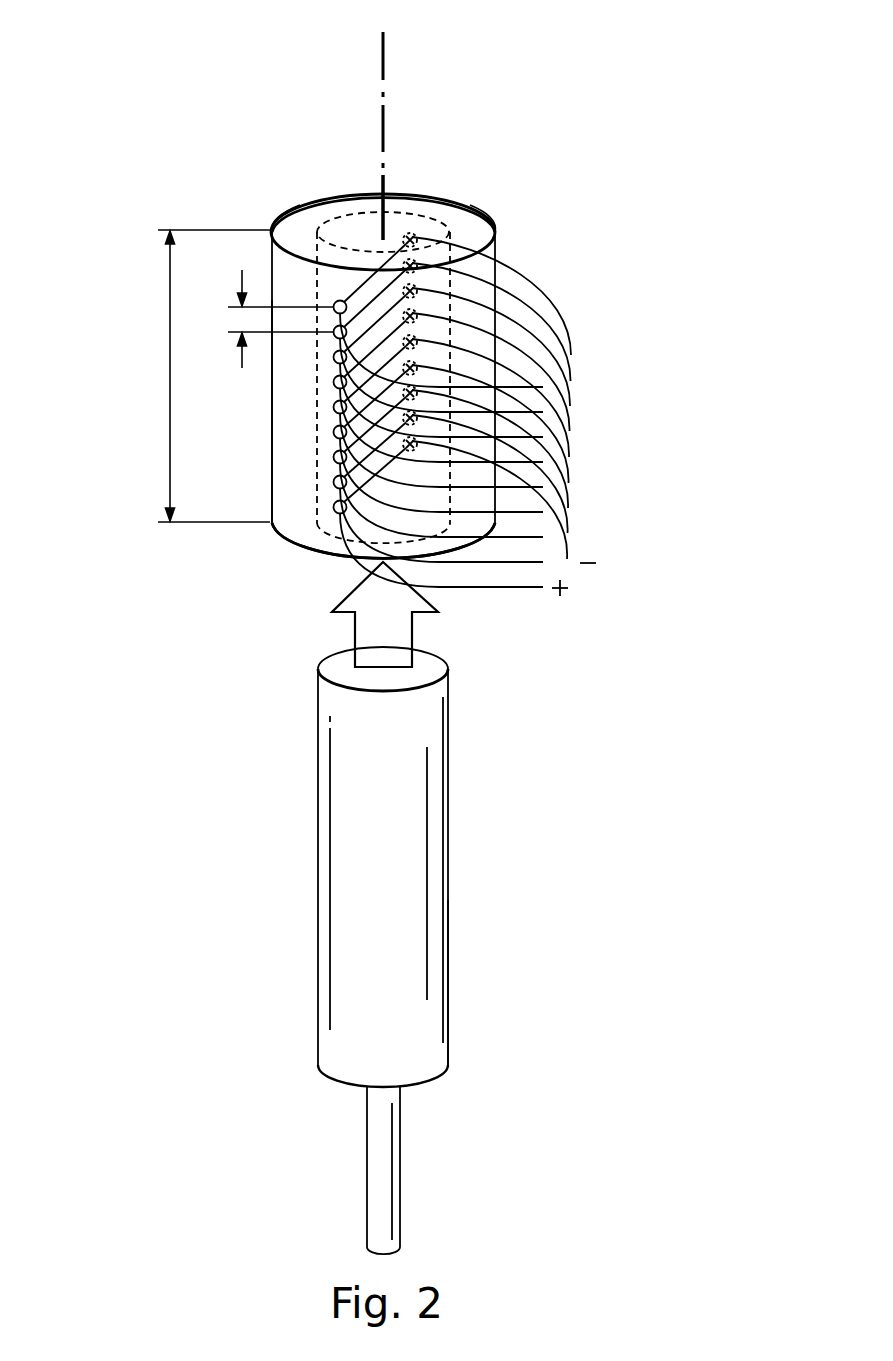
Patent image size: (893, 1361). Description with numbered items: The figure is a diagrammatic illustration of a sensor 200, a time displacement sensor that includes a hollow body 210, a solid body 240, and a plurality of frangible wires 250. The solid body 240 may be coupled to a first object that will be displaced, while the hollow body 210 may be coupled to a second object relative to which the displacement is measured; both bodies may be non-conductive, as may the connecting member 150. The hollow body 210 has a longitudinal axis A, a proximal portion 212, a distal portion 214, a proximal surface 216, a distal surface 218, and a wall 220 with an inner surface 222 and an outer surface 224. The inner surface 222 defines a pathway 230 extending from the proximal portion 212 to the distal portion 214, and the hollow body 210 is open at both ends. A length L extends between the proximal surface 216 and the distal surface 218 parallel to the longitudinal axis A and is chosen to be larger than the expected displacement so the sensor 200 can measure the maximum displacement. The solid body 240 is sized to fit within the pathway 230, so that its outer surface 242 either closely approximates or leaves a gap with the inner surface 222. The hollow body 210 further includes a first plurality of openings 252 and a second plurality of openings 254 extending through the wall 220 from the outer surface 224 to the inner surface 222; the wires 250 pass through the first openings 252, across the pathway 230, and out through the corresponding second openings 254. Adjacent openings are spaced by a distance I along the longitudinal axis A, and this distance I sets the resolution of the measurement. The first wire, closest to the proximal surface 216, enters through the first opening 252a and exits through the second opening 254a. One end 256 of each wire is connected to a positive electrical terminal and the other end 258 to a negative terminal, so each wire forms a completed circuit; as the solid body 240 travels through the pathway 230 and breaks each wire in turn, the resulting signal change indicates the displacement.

The sensor 200 is at (148, 100).
The hollow body 210 is at (427, 190).
The proximal portion 212 is at (258, 540).
The distal portion 214 is at (262, 188).
The proximal surface 216 is at (322, 560).
The distal surface 218 is at (284, 230).
The wall 220 is at (478, 232).
The inner surface 222 is at (320, 232).
The outer surface 224 is at (270, 403).
The pathway 230 is at (364, 232).
The solid body 240 is at (452, 848).
The outer surface 242 is at (450, 990).
The connecting member 150 is at (401, 1168).
The plurality of frangible wires 250 is at (574, 262).
The first plurality of openings 252 is at (322, 522).
The first opening 252a is at (330, 512).
The second plurality of openings 254 is at (422, 461).
The second opening 254a is at (420, 446).
The end 256 is at (549, 620).
The end 258 is at (611, 544).
The longitudinal axis A is at (381, 123).
The length L is at (207, 376).
The distance I is at (272, 319).